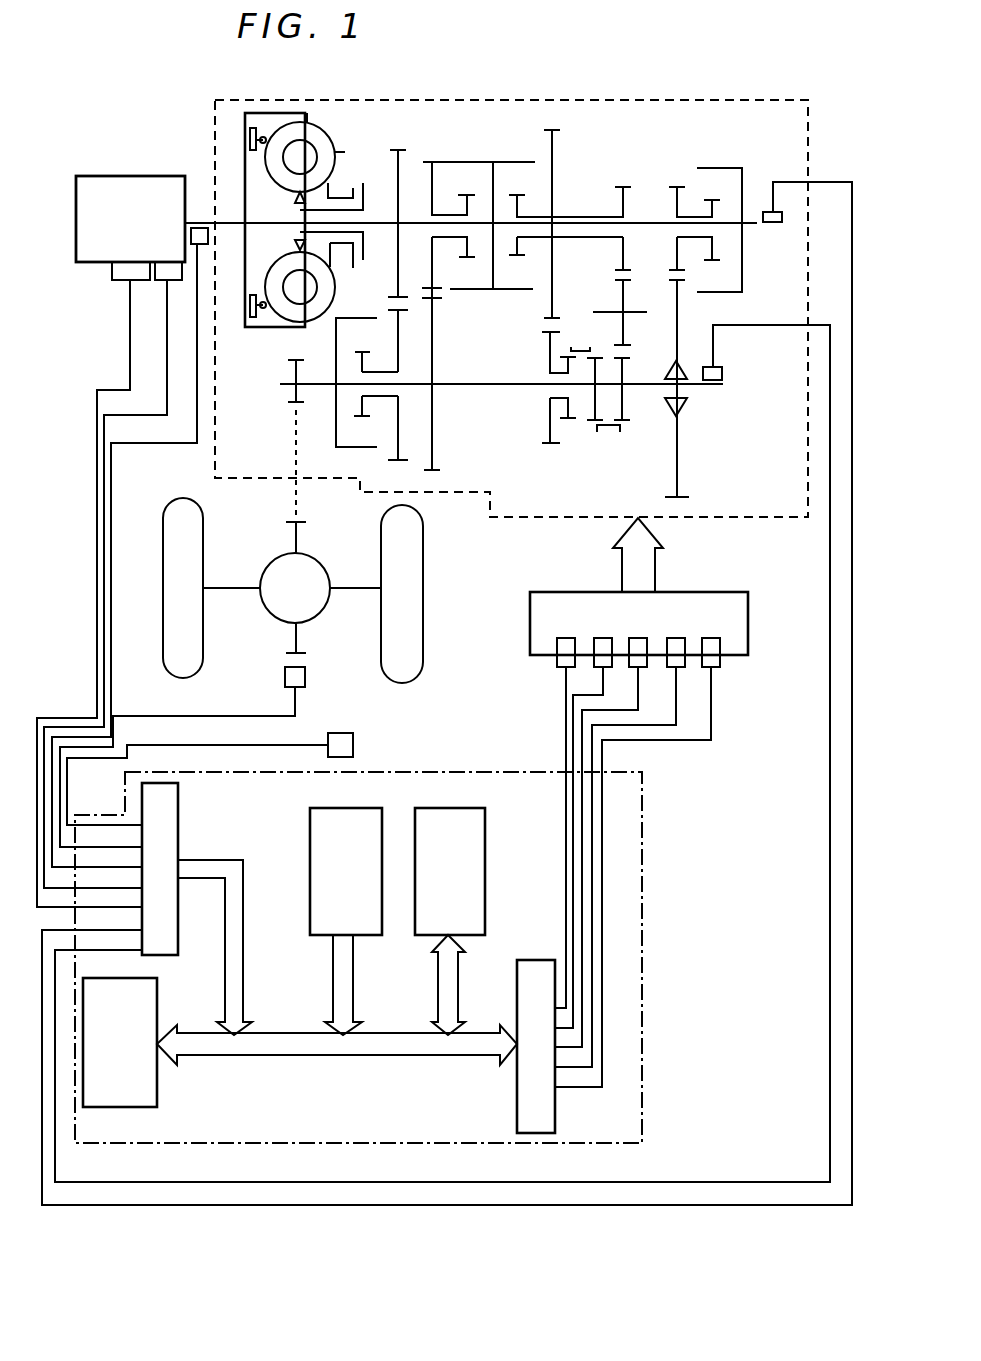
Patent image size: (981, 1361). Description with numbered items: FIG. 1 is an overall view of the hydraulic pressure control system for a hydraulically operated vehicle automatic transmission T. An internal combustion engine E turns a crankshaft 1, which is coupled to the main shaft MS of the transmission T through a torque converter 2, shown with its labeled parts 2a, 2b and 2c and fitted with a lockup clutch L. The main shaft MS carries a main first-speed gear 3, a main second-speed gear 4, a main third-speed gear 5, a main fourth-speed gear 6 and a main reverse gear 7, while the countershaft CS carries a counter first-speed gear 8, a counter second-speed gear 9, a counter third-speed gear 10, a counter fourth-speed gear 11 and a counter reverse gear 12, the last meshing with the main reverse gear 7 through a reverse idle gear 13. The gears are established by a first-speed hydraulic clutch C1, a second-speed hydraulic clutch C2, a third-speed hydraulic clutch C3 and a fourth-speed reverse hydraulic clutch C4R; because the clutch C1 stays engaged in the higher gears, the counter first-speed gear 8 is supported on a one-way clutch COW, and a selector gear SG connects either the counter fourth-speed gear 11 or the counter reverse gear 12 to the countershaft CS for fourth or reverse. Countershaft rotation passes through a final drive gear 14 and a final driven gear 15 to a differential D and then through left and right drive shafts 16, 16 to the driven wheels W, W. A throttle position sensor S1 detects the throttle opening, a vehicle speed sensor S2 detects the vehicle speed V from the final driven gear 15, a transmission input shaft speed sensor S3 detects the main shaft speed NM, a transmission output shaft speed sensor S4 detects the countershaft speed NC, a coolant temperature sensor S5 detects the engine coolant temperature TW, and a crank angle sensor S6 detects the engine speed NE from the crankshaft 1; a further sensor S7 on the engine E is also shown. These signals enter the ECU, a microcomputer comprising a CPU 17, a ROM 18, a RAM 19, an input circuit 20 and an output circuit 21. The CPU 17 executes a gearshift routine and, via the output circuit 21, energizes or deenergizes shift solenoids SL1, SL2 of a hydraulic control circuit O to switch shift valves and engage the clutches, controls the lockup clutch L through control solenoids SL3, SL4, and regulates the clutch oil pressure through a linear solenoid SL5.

The internal combustion engine E is at (100, 176).
The crankshaft 1 is at (206, 216).
The torque converter 2 is at (309, 192).
The turbine 2a is at (319, 233).
The pump impeller 2b is at (290, 133).
The lock-up clutch 2c is at (296, 187).
The lockup clutch L is at (243, 120).
The vehicle automatic transmission T is at (760, 98).
The main first-speed gear 3 is at (677, 185).
The main second-speed gear 4 is at (432, 162).
The main third-speed gear 5 is at (397, 150).
The main fourth-speed gear 6 is at (555, 124).
The main reverse gear 7 is at (624, 186).
The counter first-speed gear 8 is at (681, 497).
The counter second-speed gear 9 is at (437, 472).
The counter third-speed gear 10 is at (398, 462).
The counter fourth-speed gear 11 is at (545, 445).
The counter reverse gear 12 is at (624, 421).
The reverse idle gear 13 is at (626, 282).
The final drive gear 14 is at (290, 360).
The final driven gear 15 is at (285, 527).
The drive shafts 16 is at (224, 590).
The CPU 17 is at (160, 1003).
The ROM 18 is at (310, 846).
The RAM 19 is at (485, 851).
The input circuit 20 is at (178, 822).
The output circuit 21 is at (517, 1092).
The first-speed hydraulic clutch C1 is at (719, 182).
The second-speed hydraulic clutch C2 is at (468, 160).
The third-speed hydraulic clutch C3 is at (345, 445).
The fourth-speed reverse hydraulic clutch C4R is at (513, 162).
The main shaft MS is at (757, 226).
The countershaft CS is at (718, 388).
The one-way clutch COW is at (669, 418).
The selector gear SG is at (594, 432).
The differential D is at (305, 568).
The driven wheels W is at (166, 564).
The hydraulic control circuit O is at (530, 606).
The shift solenoid SL1 is at (557, 658).
The shift solenoid SL2 is at (594, 662).
The control solenoid SL3 is at (640, 665).
The control solenoid SL4 is at (680, 665).
The linear solenoid SL5 is at (720, 657).
The throttle position sensor S1 is at (120, 272).
The vehicle speed sensor S2 is at (305, 677).
The transmission input shaft speed sensor S3 is at (766, 210).
The transmission output shaft speed sensor S4 is at (722, 373).
The coolant temperature sensor S5 is at (353, 745).
The crank angle sensor S6 is at (208, 226).
The throttle opening sensor S7 is at (165, 272).
The element ECU is at (645, 930).
The engine coolant temperature TW is at (145, 404).
The engine speed NE is at (173, 430).
The vehicle traveling speed V is at (143, 698).
The transmission input shaft rotational speed NM is at (109, 929).
The transmission output shaft rotational speed NC is at (107, 949).